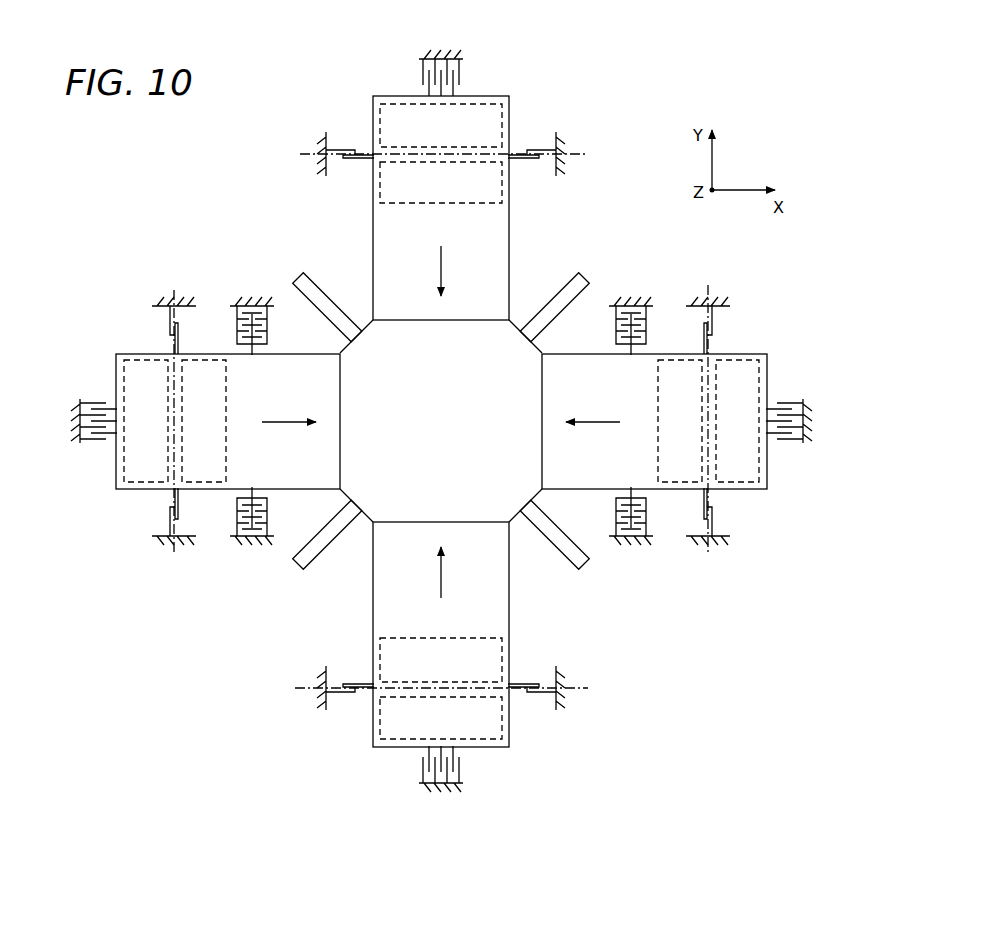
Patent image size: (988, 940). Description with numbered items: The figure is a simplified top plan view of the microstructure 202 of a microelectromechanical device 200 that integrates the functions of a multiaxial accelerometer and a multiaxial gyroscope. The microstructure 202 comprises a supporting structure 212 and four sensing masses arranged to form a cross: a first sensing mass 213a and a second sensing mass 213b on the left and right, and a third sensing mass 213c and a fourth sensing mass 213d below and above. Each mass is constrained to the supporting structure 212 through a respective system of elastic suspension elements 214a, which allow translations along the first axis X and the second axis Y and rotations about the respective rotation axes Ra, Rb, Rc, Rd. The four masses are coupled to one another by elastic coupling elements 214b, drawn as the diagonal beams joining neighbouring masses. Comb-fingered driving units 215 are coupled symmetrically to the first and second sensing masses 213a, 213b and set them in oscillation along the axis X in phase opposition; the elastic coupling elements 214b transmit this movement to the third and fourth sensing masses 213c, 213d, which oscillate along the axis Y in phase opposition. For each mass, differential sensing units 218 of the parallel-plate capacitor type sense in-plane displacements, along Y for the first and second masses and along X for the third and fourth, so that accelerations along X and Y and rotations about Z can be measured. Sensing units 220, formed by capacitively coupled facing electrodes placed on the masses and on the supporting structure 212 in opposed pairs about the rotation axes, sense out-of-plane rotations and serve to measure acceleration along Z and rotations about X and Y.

The microelectromechanical device 200 is at (150, 678).
The microstructure 202 is at (247, 239).
The supporting structure 212 is at (446, 36).
The first sensing mass 213a is at (330, 477).
The second sensing mass 213b is at (612, 477).
The third sensing mass 213c is at (432, 630).
The fourth sensing mass 213d is at (498, 243).
The elastic suspension elements 214a is at (369, 148).
The elastic coupling elements 214b is at (333, 301).
The driving units 215 is at (283, 320).
The sensing units 218 is at (468, 66).
The sensing units 220 is at (404, 218).